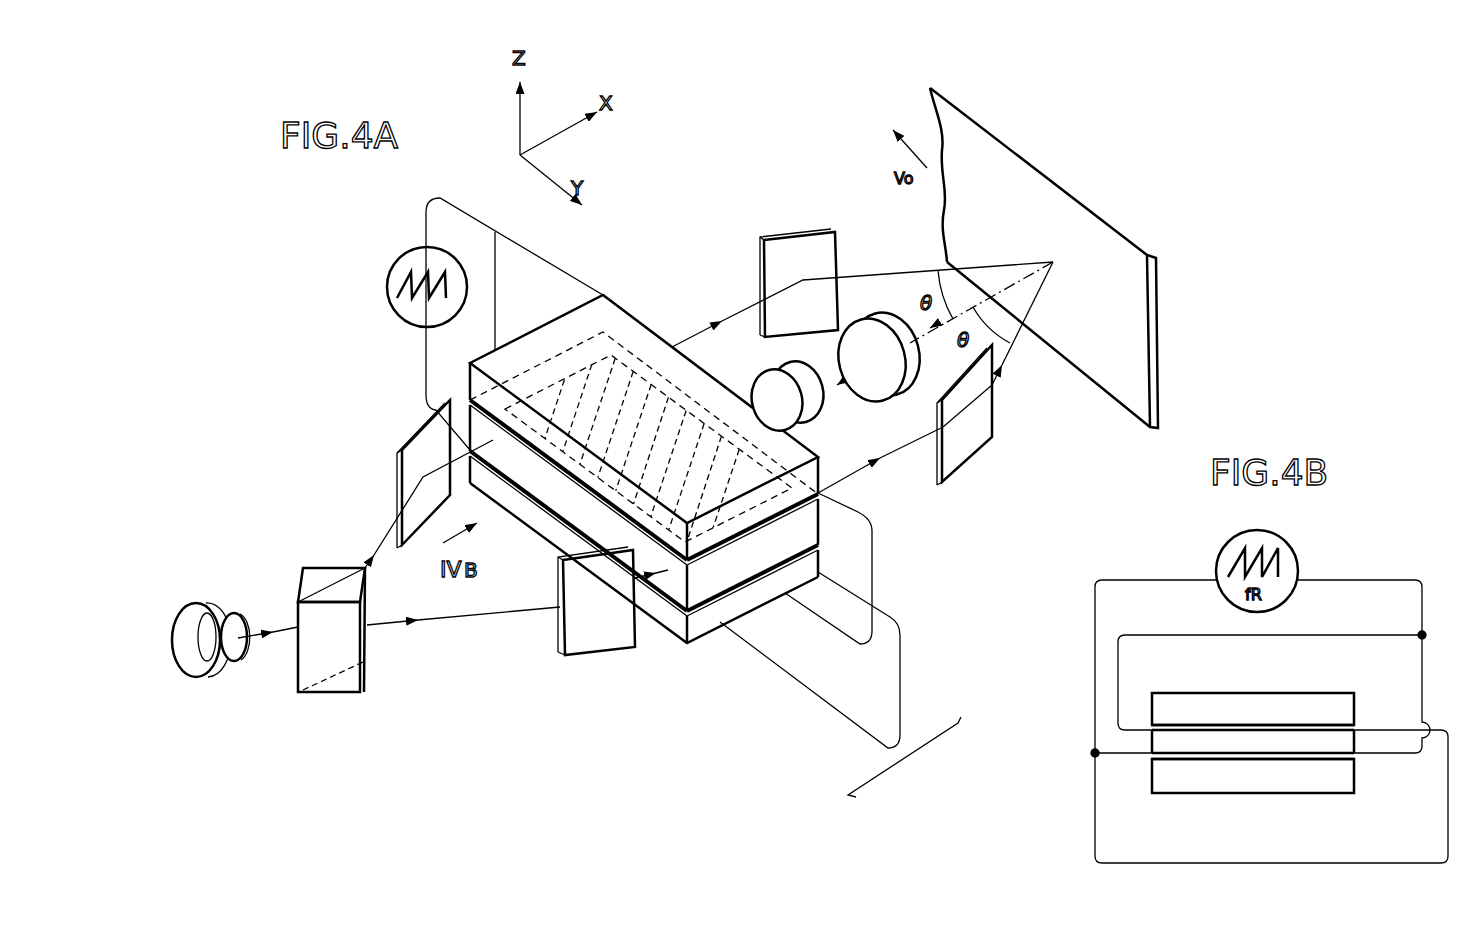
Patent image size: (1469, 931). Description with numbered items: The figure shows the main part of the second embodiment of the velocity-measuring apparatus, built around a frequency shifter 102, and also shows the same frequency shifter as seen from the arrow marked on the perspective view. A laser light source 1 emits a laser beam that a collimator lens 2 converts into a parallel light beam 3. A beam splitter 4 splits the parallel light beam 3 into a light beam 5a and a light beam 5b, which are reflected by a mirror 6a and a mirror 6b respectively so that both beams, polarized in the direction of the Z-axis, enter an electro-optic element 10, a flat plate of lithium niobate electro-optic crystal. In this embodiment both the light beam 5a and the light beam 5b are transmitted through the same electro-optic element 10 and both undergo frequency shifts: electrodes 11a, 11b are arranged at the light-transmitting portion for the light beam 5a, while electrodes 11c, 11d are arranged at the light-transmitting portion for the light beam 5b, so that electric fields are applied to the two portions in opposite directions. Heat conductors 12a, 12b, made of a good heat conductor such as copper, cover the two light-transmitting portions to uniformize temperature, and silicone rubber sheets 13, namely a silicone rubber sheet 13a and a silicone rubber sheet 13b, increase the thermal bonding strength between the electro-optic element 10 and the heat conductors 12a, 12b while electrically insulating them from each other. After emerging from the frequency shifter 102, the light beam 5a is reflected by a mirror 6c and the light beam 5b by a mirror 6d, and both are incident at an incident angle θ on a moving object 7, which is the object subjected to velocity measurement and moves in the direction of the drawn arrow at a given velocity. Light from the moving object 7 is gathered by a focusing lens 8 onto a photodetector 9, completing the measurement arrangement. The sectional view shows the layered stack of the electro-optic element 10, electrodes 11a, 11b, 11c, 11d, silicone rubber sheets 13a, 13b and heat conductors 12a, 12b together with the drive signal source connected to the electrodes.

In FIG. 4A, the laser light source 1 is at (205, 603).
In FIG. 4A, the collimator lens 2 is at (238, 658).
In FIG. 4A, the parallel light beam 3 is at (263, 632).
In FIG. 4A, the beam splitter 4 is at (323, 575).
In FIG. 4A, the light beam 5a is at (390, 530).
In FIG. 4A, the light beam 5b is at (472, 622).
In FIG. 4A, the mirror 6a is at (410, 433).
In FIG. 4A, the mirror 6b is at (595, 640).
In FIG. 4A, the mirror 6c is at (793, 248).
In FIG. 4A, the mirror 6d is at (965, 430).
In FIG. 4A, the moving object 7 is at (1017, 177).
In FIG. 4A, the focusing lens 8 is at (880, 385).
In FIG. 4A, the photodetector 9 is at (765, 393).
In FIG. 4A, the electro-optic element 10 is at (707, 578).
In FIG. 4B, the electro-optic element 10 is at (1253, 747).
In FIG. 4A, the electrode 11a is at (628, 357).
In FIG. 4B, the electrode 11a is at (1172, 720).
In FIG. 4B, the electrode 11b is at (1180, 755).
In FIG. 4B, the electrode 11c is at (1318, 730).
In FIG. 4B, the electrode 11d is at (1320, 755).
In FIG. 4B, the heat conductor 12a is at (1212, 705).
In FIG. 4B, the heat conductor 12b is at (1217, 788).
In FIG. 4A, the silicone rubber sheet 13a is at (787, 518).
In FIG. 4B, the silicone rubber sheet 13a is at (1252, 728).
In FIG. 4A, the silicone rubber sheet 13b is at (797, 557).
In FIG. 4B, the silicone rubber sheet 13b is at (1273, 757).
In FIG. 4A, the silicone rubber sheets 13 is at (945, 502).
In FIG. 4A, the frequency shifter 102 is at (904, 757).